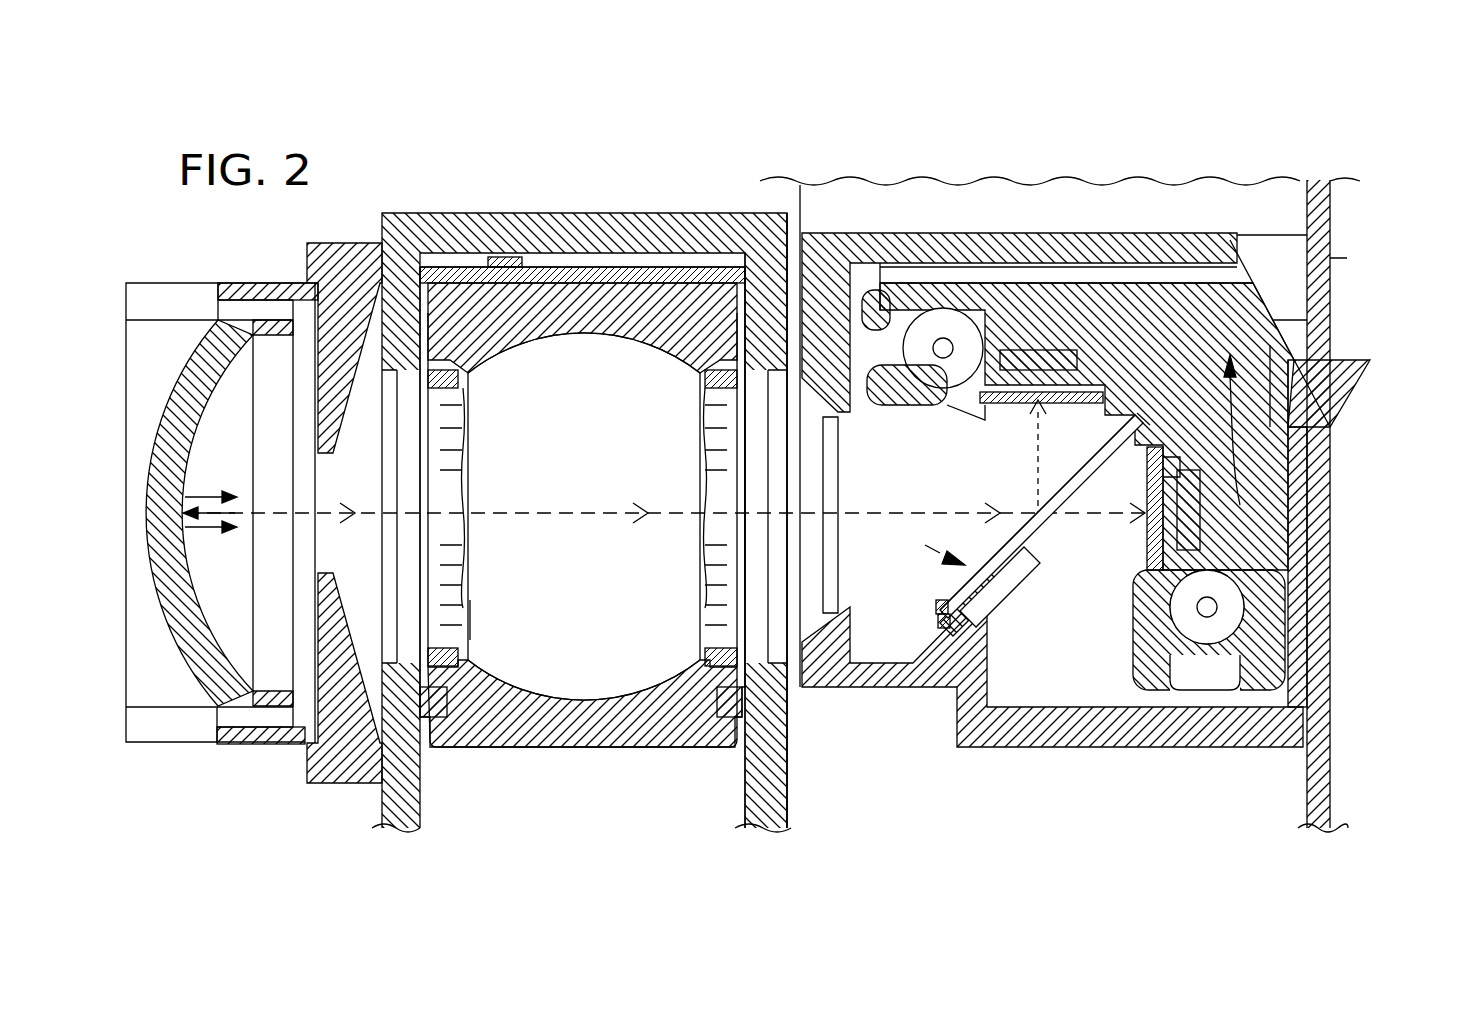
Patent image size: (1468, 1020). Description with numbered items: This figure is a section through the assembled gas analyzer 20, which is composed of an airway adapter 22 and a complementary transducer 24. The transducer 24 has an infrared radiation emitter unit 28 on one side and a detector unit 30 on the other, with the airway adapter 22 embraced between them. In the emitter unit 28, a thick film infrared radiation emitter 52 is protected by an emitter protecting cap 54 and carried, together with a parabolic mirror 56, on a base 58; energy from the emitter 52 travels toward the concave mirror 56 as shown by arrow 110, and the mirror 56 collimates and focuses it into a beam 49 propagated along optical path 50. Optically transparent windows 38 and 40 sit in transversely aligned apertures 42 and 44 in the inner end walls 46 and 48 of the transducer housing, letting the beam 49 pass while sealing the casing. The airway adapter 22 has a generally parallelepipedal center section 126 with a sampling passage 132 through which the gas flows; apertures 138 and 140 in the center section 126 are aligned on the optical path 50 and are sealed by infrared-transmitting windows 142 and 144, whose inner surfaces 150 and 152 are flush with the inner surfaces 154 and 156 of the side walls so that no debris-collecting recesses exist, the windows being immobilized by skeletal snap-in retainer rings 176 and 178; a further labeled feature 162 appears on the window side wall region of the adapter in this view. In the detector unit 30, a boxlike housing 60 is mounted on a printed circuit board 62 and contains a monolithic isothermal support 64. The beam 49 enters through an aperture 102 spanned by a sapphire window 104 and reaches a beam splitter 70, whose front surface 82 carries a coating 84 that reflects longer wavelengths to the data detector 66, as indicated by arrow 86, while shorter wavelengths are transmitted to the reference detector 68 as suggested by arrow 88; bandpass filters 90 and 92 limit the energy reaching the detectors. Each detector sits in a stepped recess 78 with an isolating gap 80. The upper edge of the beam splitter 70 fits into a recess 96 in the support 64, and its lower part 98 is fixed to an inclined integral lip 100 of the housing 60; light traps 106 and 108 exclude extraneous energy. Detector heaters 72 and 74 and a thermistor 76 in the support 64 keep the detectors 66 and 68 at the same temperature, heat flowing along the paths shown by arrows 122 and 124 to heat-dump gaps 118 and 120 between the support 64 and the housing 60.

The gas analyzer 20 is at (836, 80).
The airway adapter 22 is at (615, 799).
The transducer 24 is at (884, 790).
The infrared radiation emitter unit 28 is at (219, 244).
The detector unit 30 is at (1004, 189).
The optically transparent window 38 is at (445, 415).
The optically transparent window 40 is at (765, 400).
The aperture 42 is at (332, 760).
The aperture 44 is at (802, 687).
The inner end wall 46 is at (417, 770).
The inner end wall 48 is at (743, 770).
The beam of infrared radiation 49 is at (245, 478).
The optical path 50 is at (578, 513).
The thick film infrared radiation emitter 52 is at (313, 555).
The emitter protecting cap 54 is at (270, 748).
The parabolic mirror 56 is at (205, 365).
The base 58 is at (245, 745).
The detector unit housing 60 is at (1105, 748).
The printed circuit board 62 is at (1347, 258).
The isothermal support 64 is at (997, 290).
The data detector 66 is at (1060, 404).
The reference detector 68 is at (1147, 470).
The beam splitter 70 is at (1137, 413).
The detector heater 72 is at (965, 405).
The detector heater 74 is at (1133, 642).
The thermistor-type current flow-limiting device 76 is at (1263, 333).
The stepped recess 78 is at (1005, 372).
The gap 80 is at (930, 365).
The front surface of beam splitter 82 is at (943, 587).
The coating 84 is at (1040, 507).
The arrow 86 is at (1040, 445).
The arrow 88 is at (1065, 545).
The data detector bandpass filter 90 is at (1051, 456).
The reference detector bandpass filter 92 is at (1147, 580).
The recess 96 is at (1150, 440).
The lower part of beam splitter 98 is at (938, 608).
The inclined integral lip 100 is at (940, 618).
The aperture 102 is at (837, 587).
The sapphire window 104 is at (822, 443).
The light trap 106 is at (985, 422).
The light trap 108 is at (957, 533).
The arrow 110 is at (277, 512).
The gap 118 is at (1130, 285).
The gap 120 is at (1288, 470).
The arrow 122 is at (1178, 325).
The arrow 124 is at (1240, 505).
The center section 126 is at (602, 768).
The sampling passage 132 is at (602, 647).
The aperture 138 is at (470, 374).
The aperture 140 is at (700, 376).
The window 142 is at (465, 556).
The window 144 is at (702, 622).
The inner surface of window 150 is at (465, 590).
The inner surface of window 152 is at (700, 490).
The inner surface of side wall 154 is at (465, 656).
The inner surface of side wall 156 is at (705, 655).
The thread end 162 is at (460, 627).
The snap-in retainer ring 176 is at (500, 698).
The snap-in retainer ring 178 is at (700, 698).